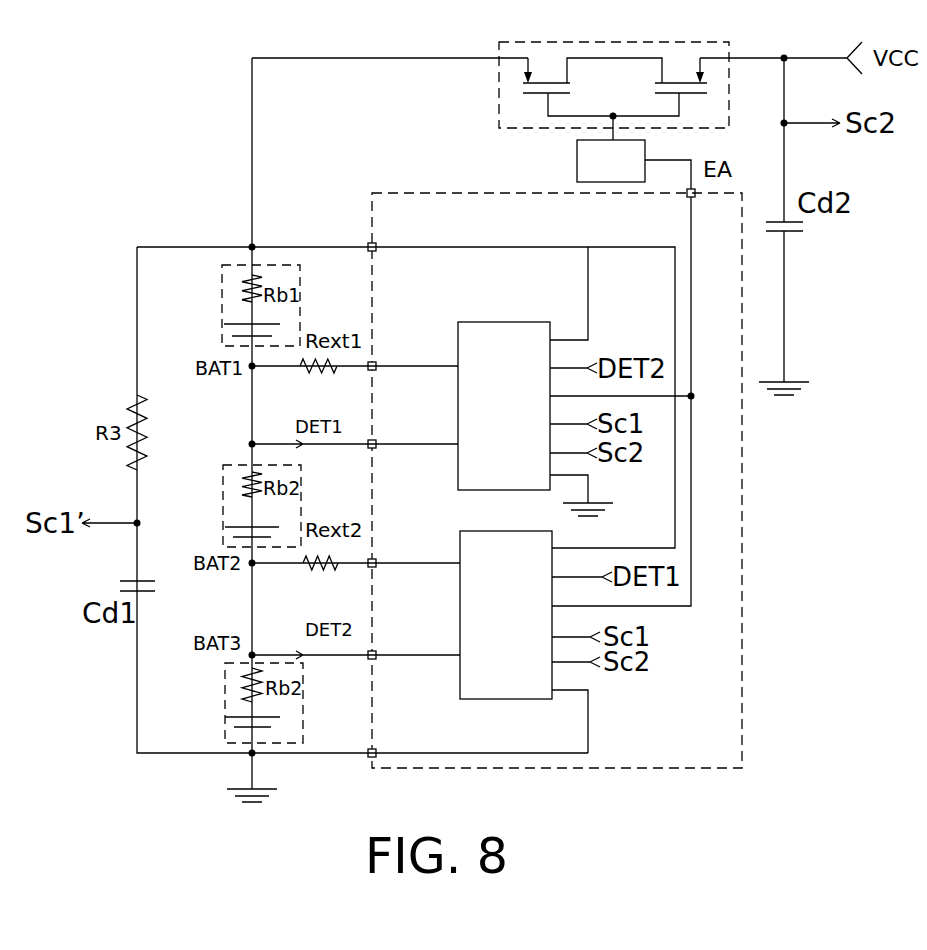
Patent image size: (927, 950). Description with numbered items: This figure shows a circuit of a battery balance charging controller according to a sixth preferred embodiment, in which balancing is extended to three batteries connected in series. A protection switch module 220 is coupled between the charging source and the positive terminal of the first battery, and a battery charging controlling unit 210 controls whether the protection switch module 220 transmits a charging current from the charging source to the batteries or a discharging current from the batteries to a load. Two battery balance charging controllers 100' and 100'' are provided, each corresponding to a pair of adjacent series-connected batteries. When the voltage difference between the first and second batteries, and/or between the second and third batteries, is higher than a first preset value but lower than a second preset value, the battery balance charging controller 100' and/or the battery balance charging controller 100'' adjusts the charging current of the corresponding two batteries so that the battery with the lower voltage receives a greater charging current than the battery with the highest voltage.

The protection switch module 220 is at (718, 44).
The battery charging controlling unit 210 is at (628, 173).
The battery balance charging controller 100' is at (504, 406).
The battery balance charging controller 100'' is at (506, 615).